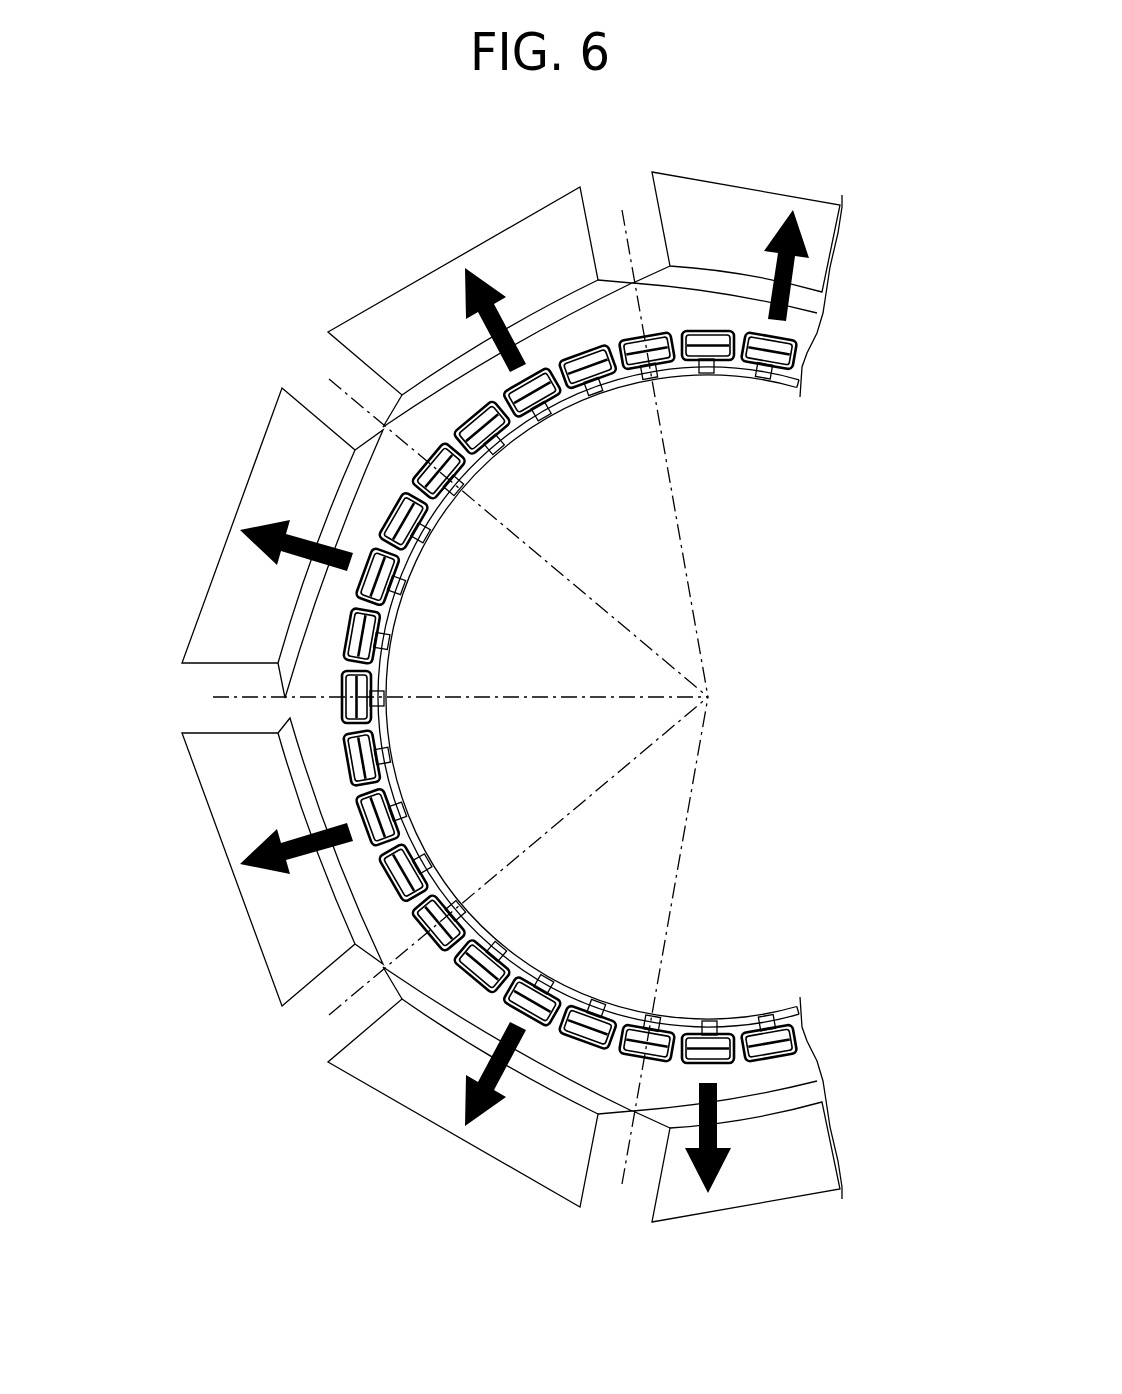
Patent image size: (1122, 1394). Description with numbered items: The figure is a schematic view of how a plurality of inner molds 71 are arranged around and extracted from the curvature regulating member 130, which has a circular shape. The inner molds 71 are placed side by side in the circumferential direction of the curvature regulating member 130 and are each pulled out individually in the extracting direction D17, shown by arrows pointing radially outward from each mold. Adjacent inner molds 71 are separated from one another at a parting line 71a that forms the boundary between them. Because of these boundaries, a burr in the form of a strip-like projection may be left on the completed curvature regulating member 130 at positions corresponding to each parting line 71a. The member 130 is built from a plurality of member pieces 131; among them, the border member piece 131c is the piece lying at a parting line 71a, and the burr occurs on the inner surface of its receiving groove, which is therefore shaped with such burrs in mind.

The inner mold 71 is at (513, 702).
The parting line 71a is at (628, 227).
The curvature regulating member 130 is at (628, 697).
The member piece 131 is at (615, 697).
The border member piece 131c is at (650, 383).
The extracting direction D17 is at (487, 287).